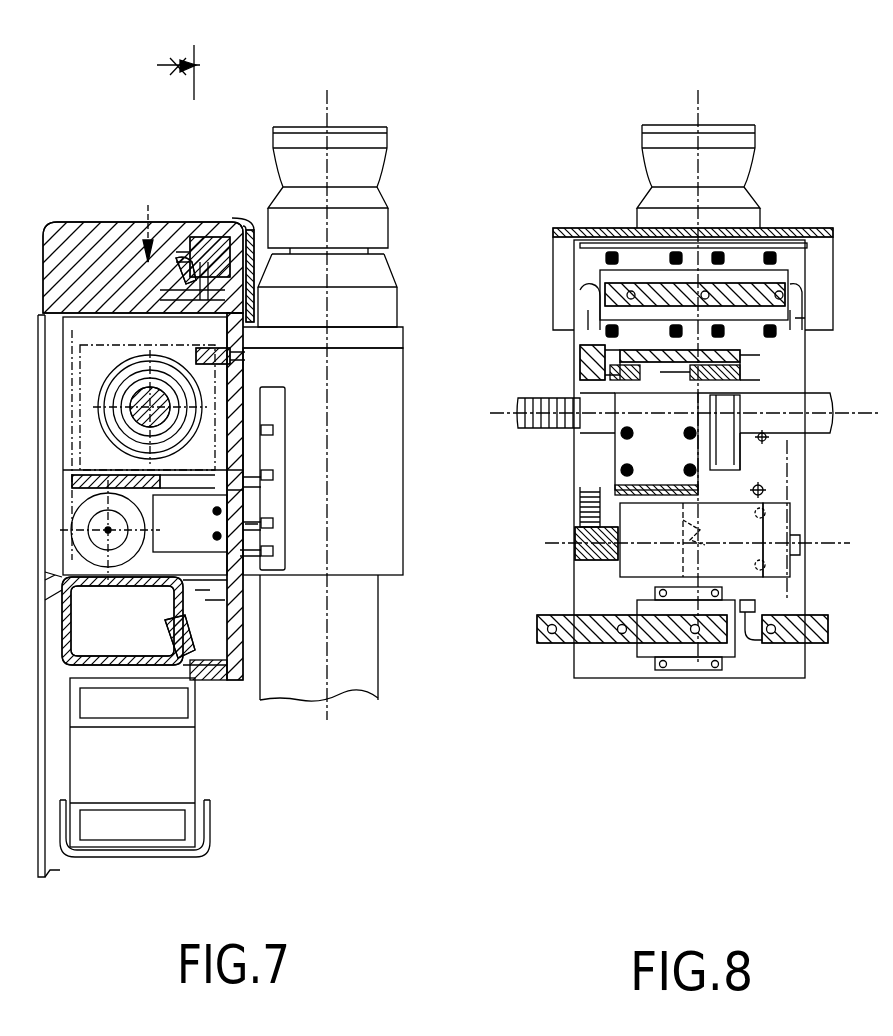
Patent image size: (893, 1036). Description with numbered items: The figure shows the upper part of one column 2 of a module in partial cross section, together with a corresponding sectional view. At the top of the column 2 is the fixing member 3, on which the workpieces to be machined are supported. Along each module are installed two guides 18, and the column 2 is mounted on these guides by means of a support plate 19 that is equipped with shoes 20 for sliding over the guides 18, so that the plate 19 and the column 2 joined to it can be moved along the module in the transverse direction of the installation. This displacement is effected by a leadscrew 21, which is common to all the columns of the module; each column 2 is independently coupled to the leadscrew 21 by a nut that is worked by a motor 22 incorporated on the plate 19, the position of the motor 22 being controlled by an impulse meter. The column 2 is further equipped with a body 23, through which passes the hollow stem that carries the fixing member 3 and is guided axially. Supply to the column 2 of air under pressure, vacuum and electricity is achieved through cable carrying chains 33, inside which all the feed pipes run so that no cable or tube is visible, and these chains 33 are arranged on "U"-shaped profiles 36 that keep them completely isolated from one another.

In FIG. 7, the column 2 is at (408, 300).
In FIG. 7, the fixing member 3 is at (365, 168).
In FIG. 8, the fixing member 3 is at (658, 170).
In FIG. 7, the guides 18 is at (187, 272).
In FIG. 8, the guides 18 is at (747, 293).
In FIG. 7, the support plate 19 is at (240, 222).
In FIG. 8, the support plate 19 is at (590, 663).
In FIG. 8, the shoes 20 is at (740, 273).
In FIG. 7, the leadscrew 21 is at (140, 402).
In FIG. 8, the leadscrew 21 is at (527, 418).
In FIG. 8, the motor 22 is at (752, 525).
In FIG. 7, the body 23 is at (375, 528).
In FIG. 7, the cable carrying chains 33 is at (178, 812).
In FIG. 7, the "U"-shaped profiles 36 is at (210, 833).